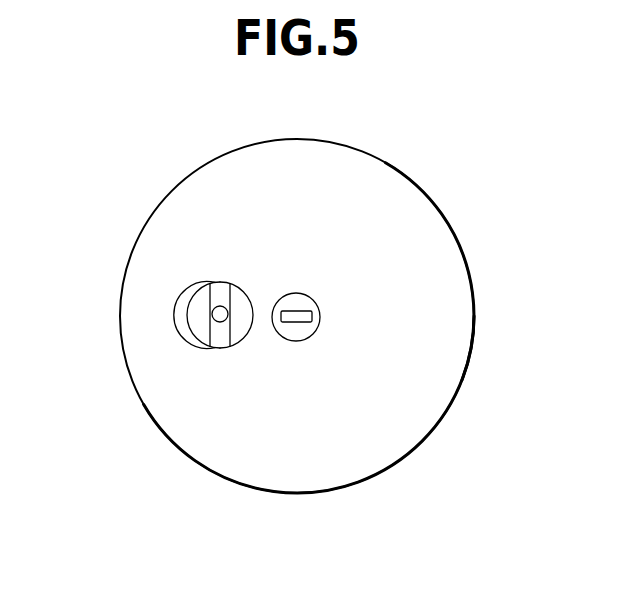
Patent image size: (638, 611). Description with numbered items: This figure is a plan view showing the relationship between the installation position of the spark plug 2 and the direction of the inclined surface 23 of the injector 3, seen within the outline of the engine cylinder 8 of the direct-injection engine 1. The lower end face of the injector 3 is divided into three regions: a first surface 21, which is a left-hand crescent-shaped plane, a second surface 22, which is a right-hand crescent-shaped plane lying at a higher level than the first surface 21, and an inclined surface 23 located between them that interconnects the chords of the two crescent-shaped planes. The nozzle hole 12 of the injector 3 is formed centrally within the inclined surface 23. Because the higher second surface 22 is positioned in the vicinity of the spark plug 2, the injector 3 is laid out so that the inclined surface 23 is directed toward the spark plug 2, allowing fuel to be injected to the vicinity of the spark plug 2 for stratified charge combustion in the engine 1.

The body 1 is at (440, 274).
The engine cylinder 8 is at (470, 351).
The injector 3 is at (188, 297).
The nozzle hole 12 is at (220, 306).
The spark plug 2 is at (299, 299).
The first surface 21 is at (202, 326).
The second surface 22 is at (239, 331).
The inclined surface 23 is at (221, 326).